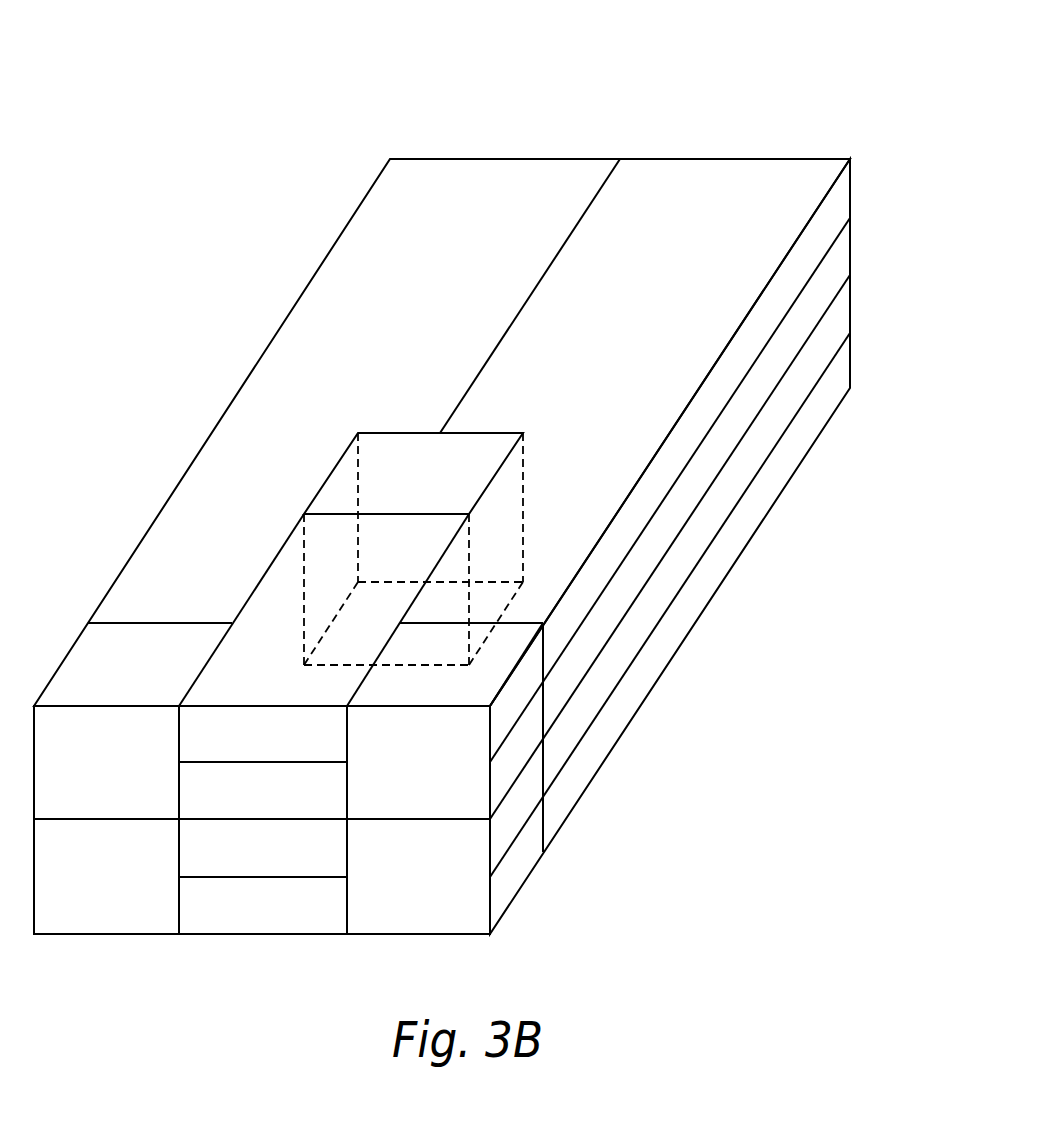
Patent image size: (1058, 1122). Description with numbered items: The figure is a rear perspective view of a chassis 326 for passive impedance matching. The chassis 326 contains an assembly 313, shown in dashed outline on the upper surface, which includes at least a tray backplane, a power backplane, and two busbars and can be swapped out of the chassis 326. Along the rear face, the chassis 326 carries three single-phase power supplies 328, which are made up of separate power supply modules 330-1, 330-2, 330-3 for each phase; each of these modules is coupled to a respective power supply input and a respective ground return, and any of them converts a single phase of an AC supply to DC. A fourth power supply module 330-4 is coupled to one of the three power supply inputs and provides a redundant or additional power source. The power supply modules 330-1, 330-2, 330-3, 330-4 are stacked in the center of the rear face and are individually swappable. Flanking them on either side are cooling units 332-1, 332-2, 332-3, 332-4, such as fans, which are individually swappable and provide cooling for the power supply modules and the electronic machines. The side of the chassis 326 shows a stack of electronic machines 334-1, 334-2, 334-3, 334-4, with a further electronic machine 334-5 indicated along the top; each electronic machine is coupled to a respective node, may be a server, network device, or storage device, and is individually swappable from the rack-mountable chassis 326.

The chassis 326 is at (218, 70).
The electronic machine 334-1 is at (733, 159).
The electronic machine 334-2 is at (849, 249).
The electronic machine 334-3 is at (849, 306).
The electronic machine 334-4 is at (849, 363).
The electronic machine 334-5 is at (495, 159).
The assembly 313 is at (525, 508).
The three single-phase power supplies 328 is at (172, 763).
The cooling unit 332-1 is at (135, 775).
The cooling unit 332-2 is at (135, 890).
The cooling unit 332-3 is at (447, 775).
The cooling unit 332-4 is at (447, 889).
The power supply module 330-1 is at (263, 790).
The power supply module 330-2 is at (263, 848).
The power supply module 330-3 is at (263, 905).
The fourth power supply module 330-4 is at (292, 746).